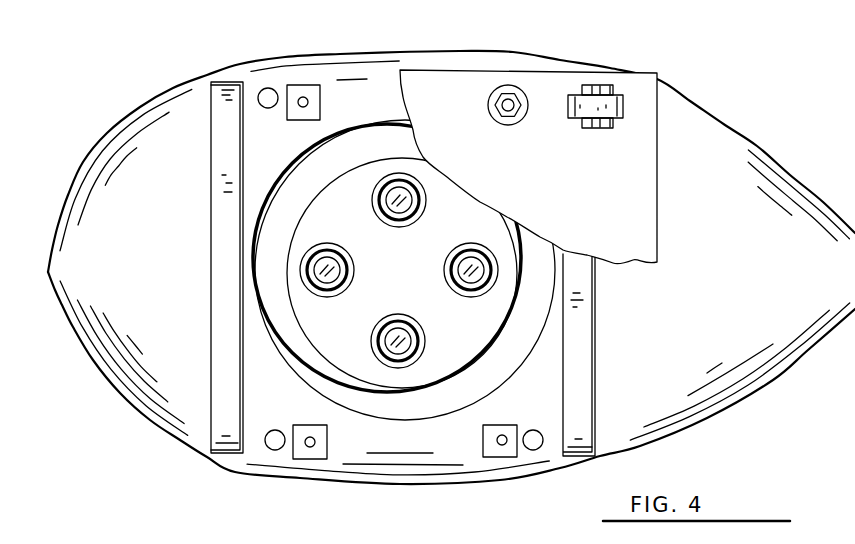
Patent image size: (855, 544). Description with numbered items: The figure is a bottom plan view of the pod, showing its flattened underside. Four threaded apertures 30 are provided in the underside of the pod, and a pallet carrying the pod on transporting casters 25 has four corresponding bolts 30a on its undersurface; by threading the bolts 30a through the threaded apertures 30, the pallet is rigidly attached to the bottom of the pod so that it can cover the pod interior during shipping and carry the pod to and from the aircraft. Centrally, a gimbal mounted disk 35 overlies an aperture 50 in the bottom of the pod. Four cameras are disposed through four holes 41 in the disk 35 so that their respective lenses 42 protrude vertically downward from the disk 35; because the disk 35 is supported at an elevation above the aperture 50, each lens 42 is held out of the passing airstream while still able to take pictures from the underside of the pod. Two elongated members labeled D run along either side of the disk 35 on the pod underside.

The transporting casters 25 is at (624, 108).
The threaded apertures 30 is at (303, 99).
The bolts 30a is at (497, 122).
The disk 35 is at (462, 229).
The holes 41 is at (373, 202).
The lenses 42 is at (400, 212).
The aperture 50 is at (499, 376).
The rail D is at (215, 283).